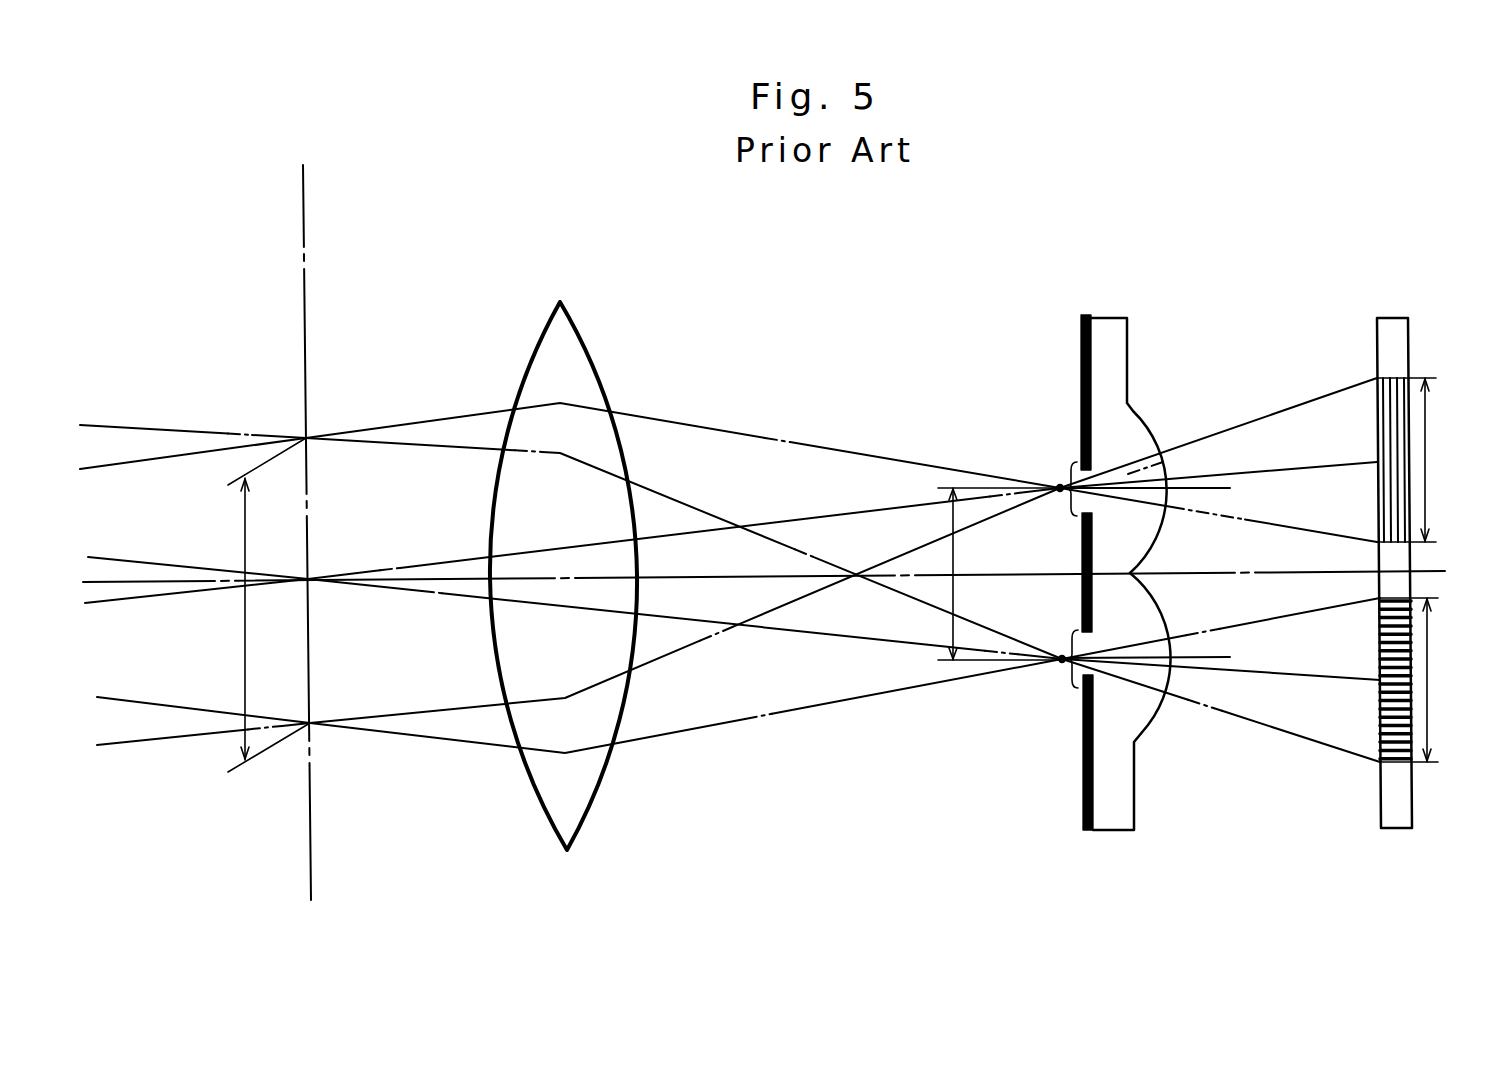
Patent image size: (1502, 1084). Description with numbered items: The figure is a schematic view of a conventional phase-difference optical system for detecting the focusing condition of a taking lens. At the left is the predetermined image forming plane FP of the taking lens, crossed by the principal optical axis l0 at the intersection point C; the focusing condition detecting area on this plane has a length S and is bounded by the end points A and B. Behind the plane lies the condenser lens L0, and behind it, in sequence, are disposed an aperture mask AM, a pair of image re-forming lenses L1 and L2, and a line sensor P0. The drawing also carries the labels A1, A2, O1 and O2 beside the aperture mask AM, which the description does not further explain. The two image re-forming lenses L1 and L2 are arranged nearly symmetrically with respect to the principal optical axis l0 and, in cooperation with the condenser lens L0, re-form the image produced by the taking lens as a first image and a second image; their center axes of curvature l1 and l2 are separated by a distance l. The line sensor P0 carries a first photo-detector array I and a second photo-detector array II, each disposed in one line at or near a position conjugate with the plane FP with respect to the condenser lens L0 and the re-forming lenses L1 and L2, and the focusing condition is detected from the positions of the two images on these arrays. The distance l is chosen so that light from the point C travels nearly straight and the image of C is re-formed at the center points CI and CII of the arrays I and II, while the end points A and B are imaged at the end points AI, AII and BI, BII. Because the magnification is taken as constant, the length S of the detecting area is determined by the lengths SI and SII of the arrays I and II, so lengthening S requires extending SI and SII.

The predetermined image forming plane FP is at (303, 200).
The end point of focusing condition detecting area A is at (307, 437).
The end point of focusing condition detecting area B is at (311, 722).
The intersection point C is at (310, 578).
The length of focusing condition detecting area S is at (242, 535).
The condenser lens L0 is at (578, 335).
The aperture mask AM is at (1081, 340).
The image re-forming lens L2 is at (1148, 422).
The image re-forming lens L1 is at (1152, 720).
The aperture A2 is at (1067, 478).
The aperture A1 is at (1068, 670).
The aperture center O2 is at (1062, 496).
The aperture center O1 is at (1063, 650).
The distance between center axes l is at (950, 532).
The center axis of curvature l2 is at (1162, 496).
The center axis of curvature l1 is at (1163, 652).
The principal optical axis l0 is at (781, 572).
The line sensor P0 is at (1394, 553).
The second photo-detector array II is at (1393, 377).
The first photo-detector array I is at (1398, 592).
The length of second photo-detector array SII is at (1419, 460).
The length of first photo-detector array SI is at (1419, 680).
The end point on second photo-detector array BII is at (1377, 378).
The center point of second photo-detector array CII is at (1377, 462).
The end point on second photo-detector array AII is at (1377, 542).
The end point on first photo-detector array BI is at (1378, 600).
The center point of first photo-detector array CI is at (1380, 680).
The end point on first photo-detector array AI is at (1380, 762).